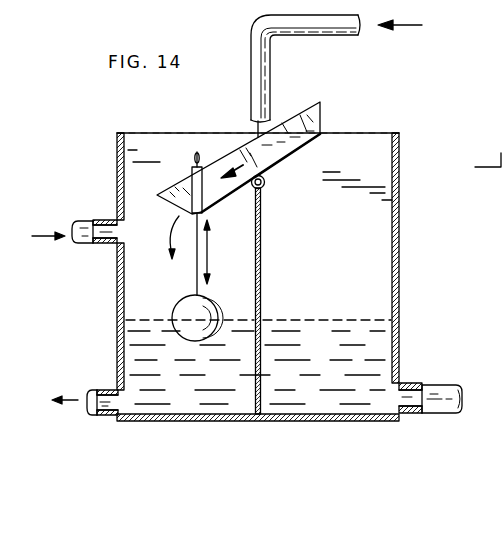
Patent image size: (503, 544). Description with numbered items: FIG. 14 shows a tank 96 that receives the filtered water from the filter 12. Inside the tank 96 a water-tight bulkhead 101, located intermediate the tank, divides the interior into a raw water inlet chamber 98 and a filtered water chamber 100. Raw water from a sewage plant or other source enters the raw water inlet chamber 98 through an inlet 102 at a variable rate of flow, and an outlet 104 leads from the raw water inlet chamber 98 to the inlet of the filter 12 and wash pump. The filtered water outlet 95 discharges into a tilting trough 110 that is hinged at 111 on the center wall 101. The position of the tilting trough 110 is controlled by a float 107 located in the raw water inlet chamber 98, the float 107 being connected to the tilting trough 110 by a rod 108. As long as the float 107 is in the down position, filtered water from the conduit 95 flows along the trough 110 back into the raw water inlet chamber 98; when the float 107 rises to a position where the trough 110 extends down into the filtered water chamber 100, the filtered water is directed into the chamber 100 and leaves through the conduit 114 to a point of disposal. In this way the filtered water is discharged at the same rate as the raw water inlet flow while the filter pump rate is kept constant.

The filter 12 is at (489, 145).
The filtered water outlet 95 is at (327, 35).
The tank 96 is at (399, 263).
The raw water inlet chamber 98 is at (165, 145).
The filtered water chamber 100 is at (382, 212).
The water-tight bulkhead 101 is at (261, 225).
The inlet 102 is at (97, 220).
The outlet 104 is at (105, 417).
The float 107 is at (180, 310).
The rod 108 is at (207, 247).
The tilting trough 110 is at (293, 151).
The hinge 111 is at (265, 184).
The conduit 114 is at (441, 390).